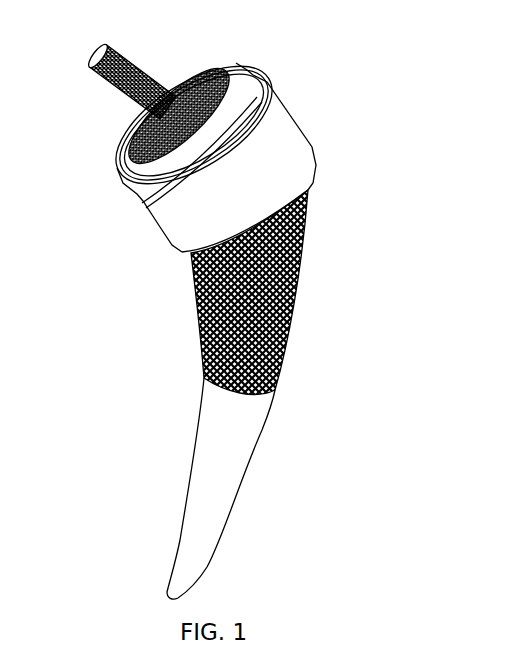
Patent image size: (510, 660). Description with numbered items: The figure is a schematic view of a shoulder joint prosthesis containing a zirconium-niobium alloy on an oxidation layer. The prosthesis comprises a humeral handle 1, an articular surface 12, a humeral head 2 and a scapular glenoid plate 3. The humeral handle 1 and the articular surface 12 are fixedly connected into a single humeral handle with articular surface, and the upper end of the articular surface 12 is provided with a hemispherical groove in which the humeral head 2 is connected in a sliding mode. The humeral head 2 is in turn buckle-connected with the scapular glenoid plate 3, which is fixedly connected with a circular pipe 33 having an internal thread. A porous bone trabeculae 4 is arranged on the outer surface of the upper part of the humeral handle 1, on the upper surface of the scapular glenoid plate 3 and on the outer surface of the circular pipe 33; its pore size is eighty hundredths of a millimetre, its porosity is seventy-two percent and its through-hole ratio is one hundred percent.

The humeral handle 1 is at (262, 430).
The humeral head 2 is at (185, 172).
The scapular glenoid plate 3 is at (128, 153).
The bone trabeculae 4 is at (294, 292).
The articular surface 12 is at (290, 147).
The circular pipe 33 is at (142, 73).